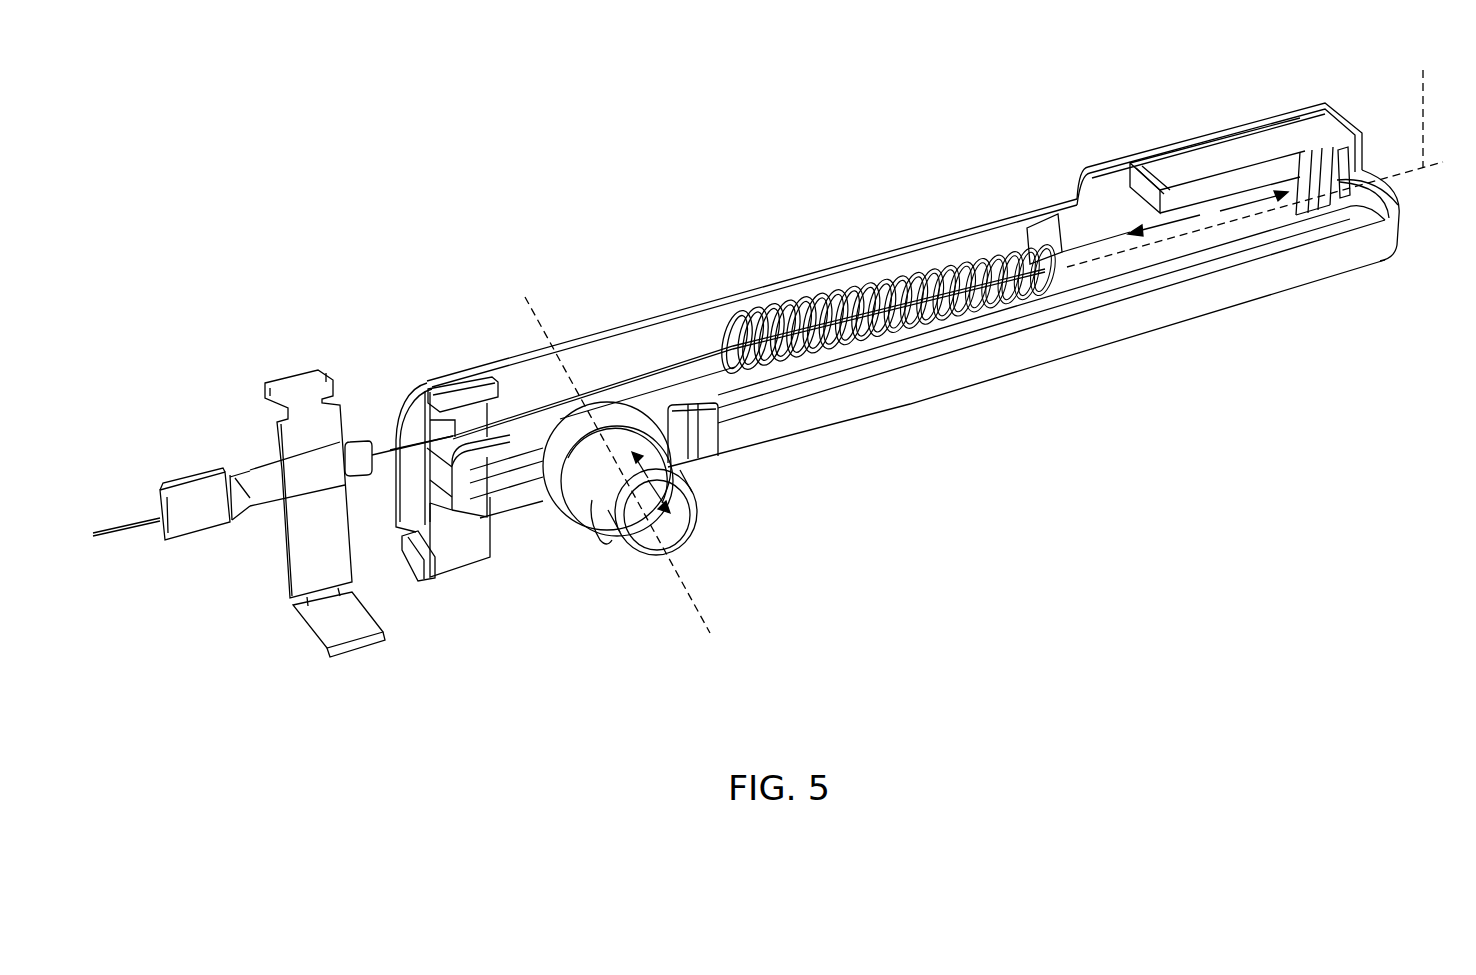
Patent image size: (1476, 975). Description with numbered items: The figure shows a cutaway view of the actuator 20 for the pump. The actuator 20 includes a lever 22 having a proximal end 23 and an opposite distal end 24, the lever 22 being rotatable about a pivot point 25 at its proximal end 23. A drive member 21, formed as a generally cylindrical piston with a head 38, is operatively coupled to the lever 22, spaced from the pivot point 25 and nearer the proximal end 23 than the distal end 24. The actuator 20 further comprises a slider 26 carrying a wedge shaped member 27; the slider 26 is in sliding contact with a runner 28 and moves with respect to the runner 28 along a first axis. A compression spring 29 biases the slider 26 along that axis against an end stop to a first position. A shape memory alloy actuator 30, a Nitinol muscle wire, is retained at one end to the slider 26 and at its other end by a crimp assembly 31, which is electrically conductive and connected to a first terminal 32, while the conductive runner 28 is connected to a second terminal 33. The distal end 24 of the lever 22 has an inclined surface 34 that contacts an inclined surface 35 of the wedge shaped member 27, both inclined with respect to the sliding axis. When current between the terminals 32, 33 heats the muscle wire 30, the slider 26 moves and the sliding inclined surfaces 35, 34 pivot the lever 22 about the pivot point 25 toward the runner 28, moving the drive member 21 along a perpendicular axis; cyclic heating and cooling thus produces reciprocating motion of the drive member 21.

The actuator 20 is at (590, 195).
The drive member 21 is at (590, 517).
The lever 22 is at (913, 380).
The proximal end 23 is at (472, 497).
The distal end 24 is at (1366, 247).
The pivot point 25 is at (487, 400).
The slider 26 is at (1173, 180).
The wedge shaped member 27 is at (1320, 153).
The runner 28 is at (1098, 190).
The compression spring 29 is at (905, 272).
The shape memory alloy actuator 30 is at (680, 360).
The crimp assembly 31 is at (240, 488).
The first terminal 32 is at (333, 627).
The second terminal 33 is at (423, 548).
The inclined surface 34 is at (1340, 185).
The inclined surface 35 is at (1340, 148).
The head 38 is at (643, 530).